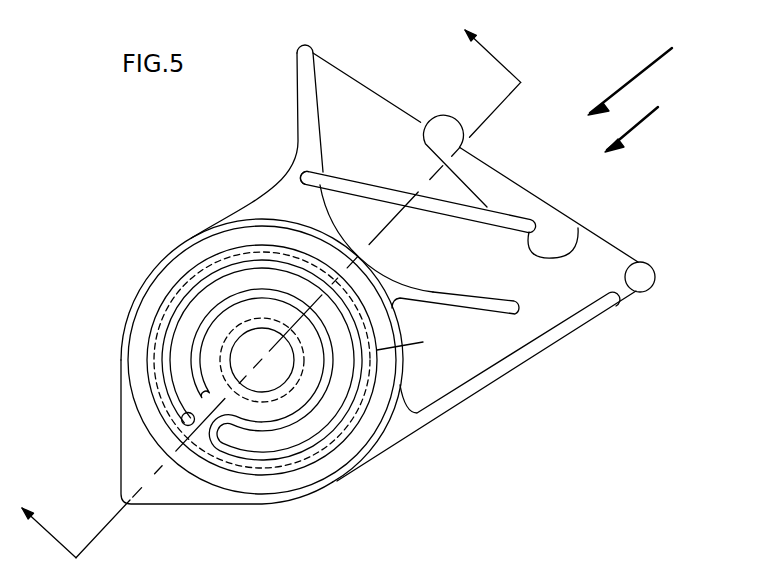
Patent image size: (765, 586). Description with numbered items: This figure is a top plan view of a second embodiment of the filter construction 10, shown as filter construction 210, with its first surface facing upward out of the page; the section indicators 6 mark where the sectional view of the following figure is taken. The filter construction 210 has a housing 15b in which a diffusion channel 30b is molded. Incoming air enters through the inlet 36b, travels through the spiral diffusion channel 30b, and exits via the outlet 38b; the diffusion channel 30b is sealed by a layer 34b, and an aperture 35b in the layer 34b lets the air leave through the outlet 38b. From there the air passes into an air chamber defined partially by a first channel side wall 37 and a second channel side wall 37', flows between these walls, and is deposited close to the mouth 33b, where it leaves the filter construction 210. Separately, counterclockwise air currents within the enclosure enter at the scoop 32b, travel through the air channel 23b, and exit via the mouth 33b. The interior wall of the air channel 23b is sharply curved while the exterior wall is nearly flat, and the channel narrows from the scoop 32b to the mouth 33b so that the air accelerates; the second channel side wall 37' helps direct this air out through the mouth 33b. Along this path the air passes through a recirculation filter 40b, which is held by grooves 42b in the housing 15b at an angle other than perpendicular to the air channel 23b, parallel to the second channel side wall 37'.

The section line 6- 6 is at (276, 305).
The filter construction 10 is at (642, 70).
The filter construction 210 is at (648, 118).
The housing 15b is at (188, 238).
The air channel 23b is at (318, 107).
The diffusion channel 30b is at (345, 433).
The scoop 32b is at (330, 64).
The mouth 33b is at (617, 246).
The layer 34b is at (157, 338).
The aperture 35b is at (263, 398).
The inlet 36b is at (182, 422).
The first channel side wall 37 is at (510, 344).
The second channel side wall 37' is at (455, 271).
The outlet 38b is at (280, 388).
The recirculation filter 40b is at (356, 182).
The grooves 42b is at (302, 176).